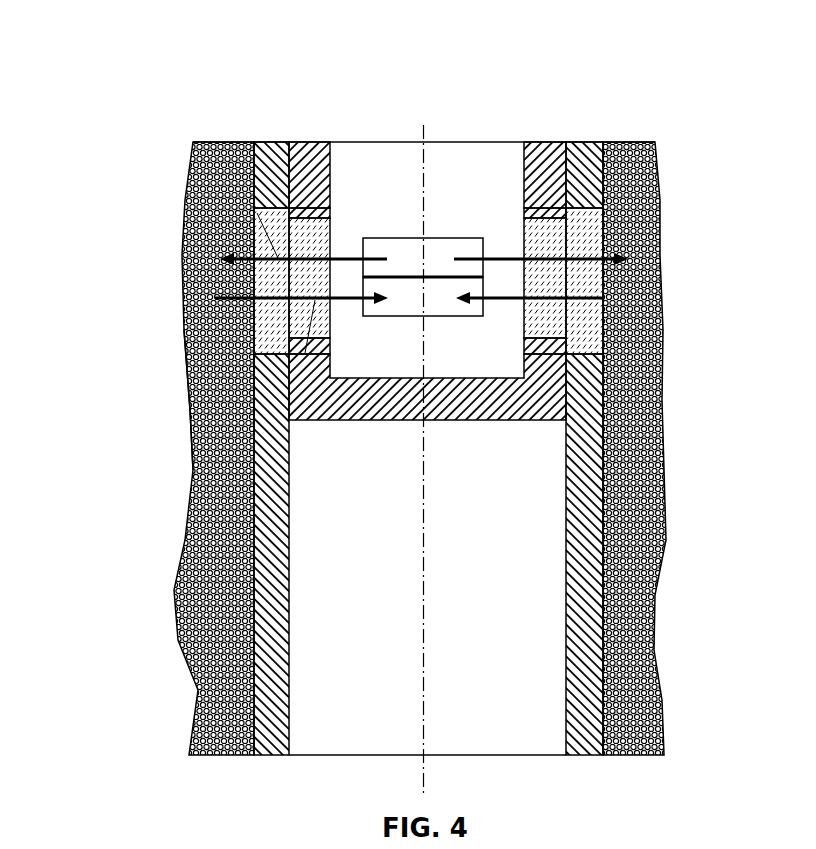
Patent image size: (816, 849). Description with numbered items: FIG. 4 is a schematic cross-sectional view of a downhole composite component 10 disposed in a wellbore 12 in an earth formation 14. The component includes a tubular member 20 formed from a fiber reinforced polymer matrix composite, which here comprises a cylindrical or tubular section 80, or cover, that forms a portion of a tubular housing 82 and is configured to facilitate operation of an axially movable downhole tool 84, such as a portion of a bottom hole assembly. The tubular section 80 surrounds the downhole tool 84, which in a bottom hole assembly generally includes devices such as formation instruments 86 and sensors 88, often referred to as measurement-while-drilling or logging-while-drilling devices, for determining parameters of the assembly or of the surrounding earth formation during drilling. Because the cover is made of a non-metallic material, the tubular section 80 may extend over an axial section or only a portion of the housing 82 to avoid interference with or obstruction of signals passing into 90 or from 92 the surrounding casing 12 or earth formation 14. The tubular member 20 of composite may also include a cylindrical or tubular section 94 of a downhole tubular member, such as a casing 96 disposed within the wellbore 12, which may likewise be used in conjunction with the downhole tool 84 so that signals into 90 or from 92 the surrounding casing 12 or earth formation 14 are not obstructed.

The downhole composite component 10 is at (638, 86).
The wellbore 12 is at (597, 697).
The earth formation 14 is at (660, 597).
The tubular member 20 is at (600, 137).
The tubular section 80 is at (281, 277).
The tubular housing 82 is at (558, 176).
The downhole tool 84 is at (570, 392).
The formation instruments 86 is at (487, 246).
The sensors 88 is at (487, 290).
The signals into the surrounding casing or earth formation 90 is at (192, 168).
The signals from the surrounding casing or earth formation 92 is at (193, 411).
The cylindrical or tubular section of a downhole tubular member 94 is at (246, 327).
The casing 96 is at (246, 377).